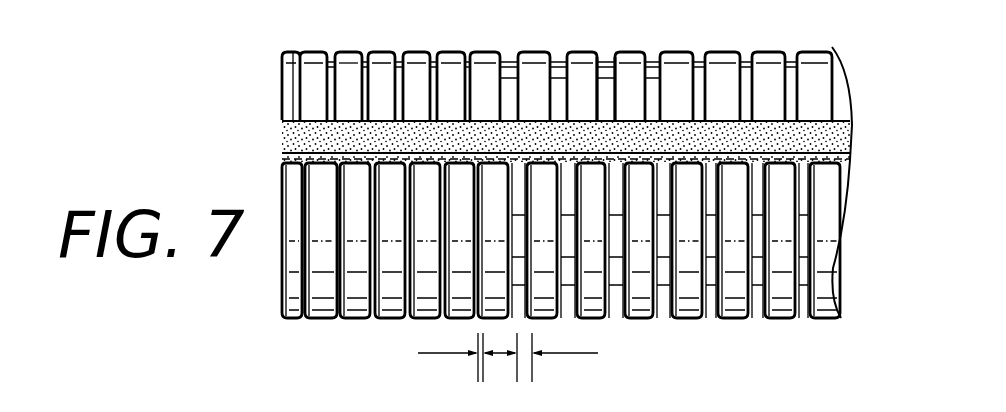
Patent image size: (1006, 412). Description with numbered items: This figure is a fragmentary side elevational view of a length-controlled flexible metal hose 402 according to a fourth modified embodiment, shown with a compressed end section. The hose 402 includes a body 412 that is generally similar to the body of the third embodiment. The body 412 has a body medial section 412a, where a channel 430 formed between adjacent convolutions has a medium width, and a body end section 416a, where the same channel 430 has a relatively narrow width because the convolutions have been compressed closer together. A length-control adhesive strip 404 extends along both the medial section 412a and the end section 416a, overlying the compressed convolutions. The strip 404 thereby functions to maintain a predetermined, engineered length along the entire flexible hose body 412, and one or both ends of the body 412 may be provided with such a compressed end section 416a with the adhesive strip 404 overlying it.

The length-controlled flexible hose 402 is at (264, 30).
The body end section 416a is at (348, 52).
The channel 430 is at (605, 62).
The length-control adhesive strip 404 is at (853, 116).
The body 412 is at (282, 320).
The body medial section 412a is at (687, 318).